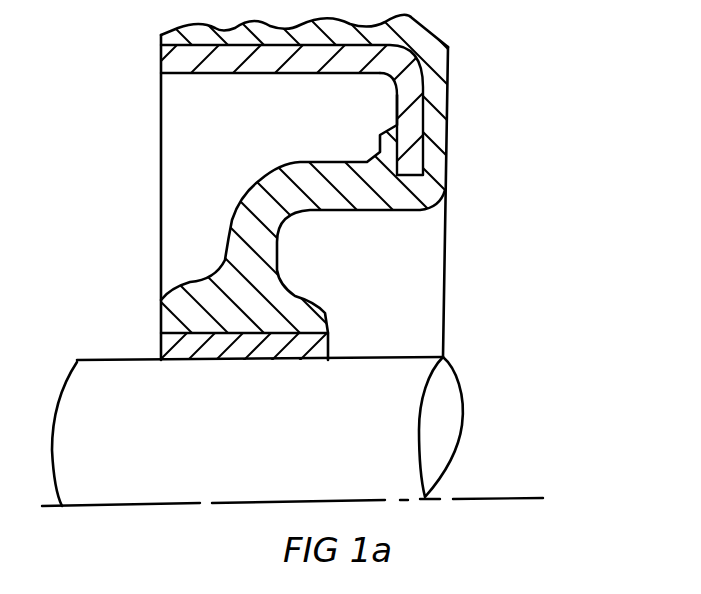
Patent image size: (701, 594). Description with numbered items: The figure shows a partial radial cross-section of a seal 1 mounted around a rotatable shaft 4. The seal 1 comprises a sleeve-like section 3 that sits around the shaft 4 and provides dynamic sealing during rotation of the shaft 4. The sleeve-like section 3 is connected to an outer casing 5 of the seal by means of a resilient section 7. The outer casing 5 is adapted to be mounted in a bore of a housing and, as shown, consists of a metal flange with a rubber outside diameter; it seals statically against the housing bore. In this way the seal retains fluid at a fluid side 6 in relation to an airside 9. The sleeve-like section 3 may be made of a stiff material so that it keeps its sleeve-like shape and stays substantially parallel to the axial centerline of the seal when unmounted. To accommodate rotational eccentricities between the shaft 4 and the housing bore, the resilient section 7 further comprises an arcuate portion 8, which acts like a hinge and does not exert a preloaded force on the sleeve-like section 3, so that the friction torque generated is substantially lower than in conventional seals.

The seal 1 is at (505, 146).
The sleeve-like section 3 is at (158, 346).
The shaft 4 is at (450, 402).
The outer casing 5 is at (180, 52).
The fluid side 6 is at (62, 228).
The resilient section 7 is at (377, 198).
The arcuate portion 8 is at (283, 190).
The airside 9 is at (615, 201).